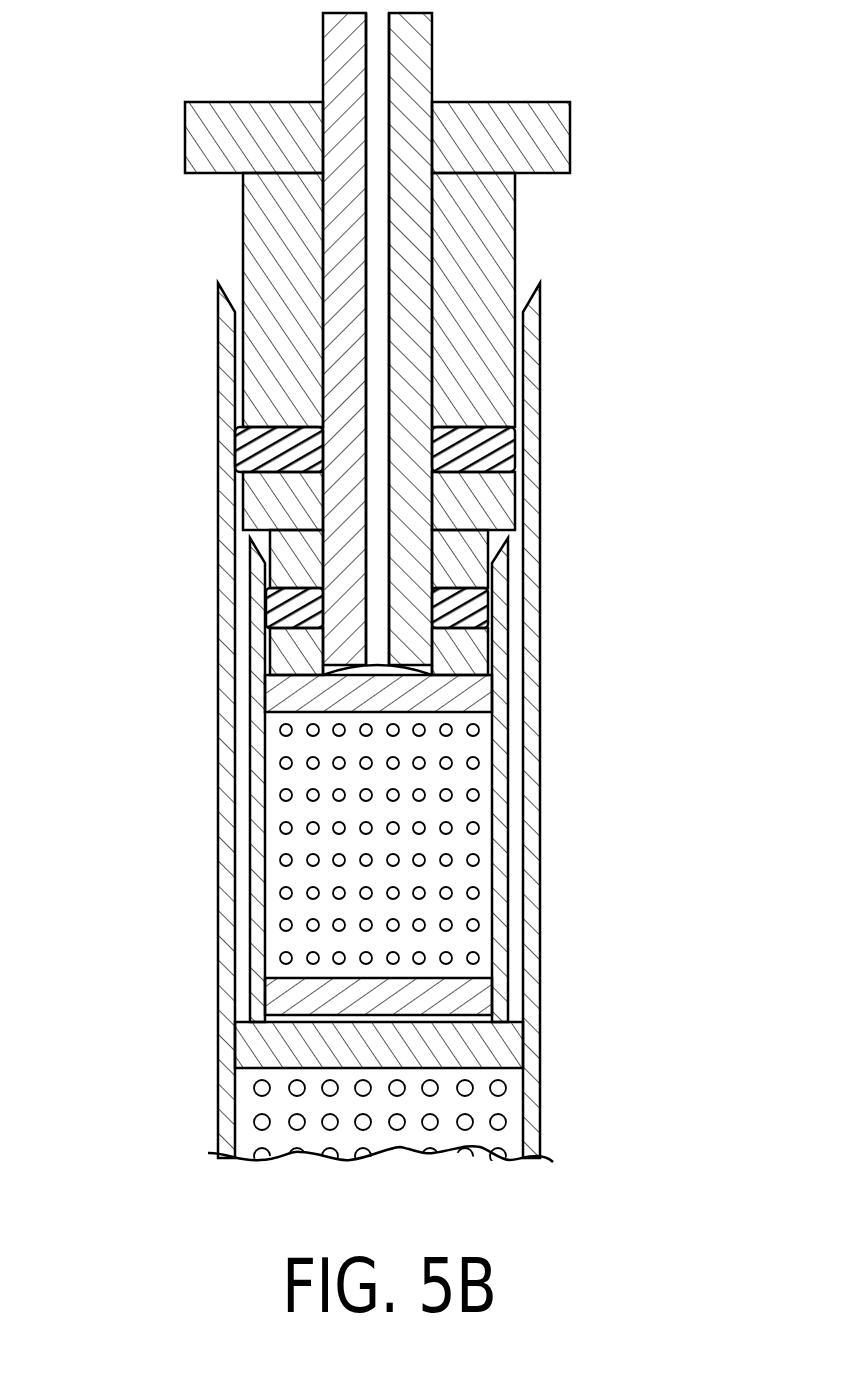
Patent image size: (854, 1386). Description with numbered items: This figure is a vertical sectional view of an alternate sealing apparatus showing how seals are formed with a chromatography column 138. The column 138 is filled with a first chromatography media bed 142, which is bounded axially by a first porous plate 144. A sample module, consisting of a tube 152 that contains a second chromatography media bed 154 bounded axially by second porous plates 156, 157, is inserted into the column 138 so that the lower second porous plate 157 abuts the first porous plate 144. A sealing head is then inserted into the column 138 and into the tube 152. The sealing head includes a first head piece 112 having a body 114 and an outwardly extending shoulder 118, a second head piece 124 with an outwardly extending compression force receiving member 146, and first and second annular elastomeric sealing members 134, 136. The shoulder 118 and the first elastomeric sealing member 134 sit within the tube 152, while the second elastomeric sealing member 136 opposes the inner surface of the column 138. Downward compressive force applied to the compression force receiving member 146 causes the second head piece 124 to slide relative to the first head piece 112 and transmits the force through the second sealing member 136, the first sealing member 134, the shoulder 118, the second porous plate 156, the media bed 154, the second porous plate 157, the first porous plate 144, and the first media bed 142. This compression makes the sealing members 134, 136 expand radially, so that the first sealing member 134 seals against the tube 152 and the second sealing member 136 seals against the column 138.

The first head piece 112 is at (322, 276).
The body 114 is at (415, 60).
The outwardly extending shoulder 118 is at (292, 651).
The second head piece 124 is at (514, 224).
The first annular elastomeric sealing member 134 is at (473, 607).
The second annular elastomeric sealing member 136 is at (497, 445).
The column 138 is at (221, 820).
The first chromatography media bed 142 is at (262, 1122).
The first porous plate 144 is at (513, 1036).
The outwardly extending compression force receiving member 146 is at (535, 127).
The tube 152 is at (500, 740).
The second chromatography media bed 154 is at (473, 828).
The second porous plate 156 is at (287, 692).
The second porous plate 157 is at (282, 996).